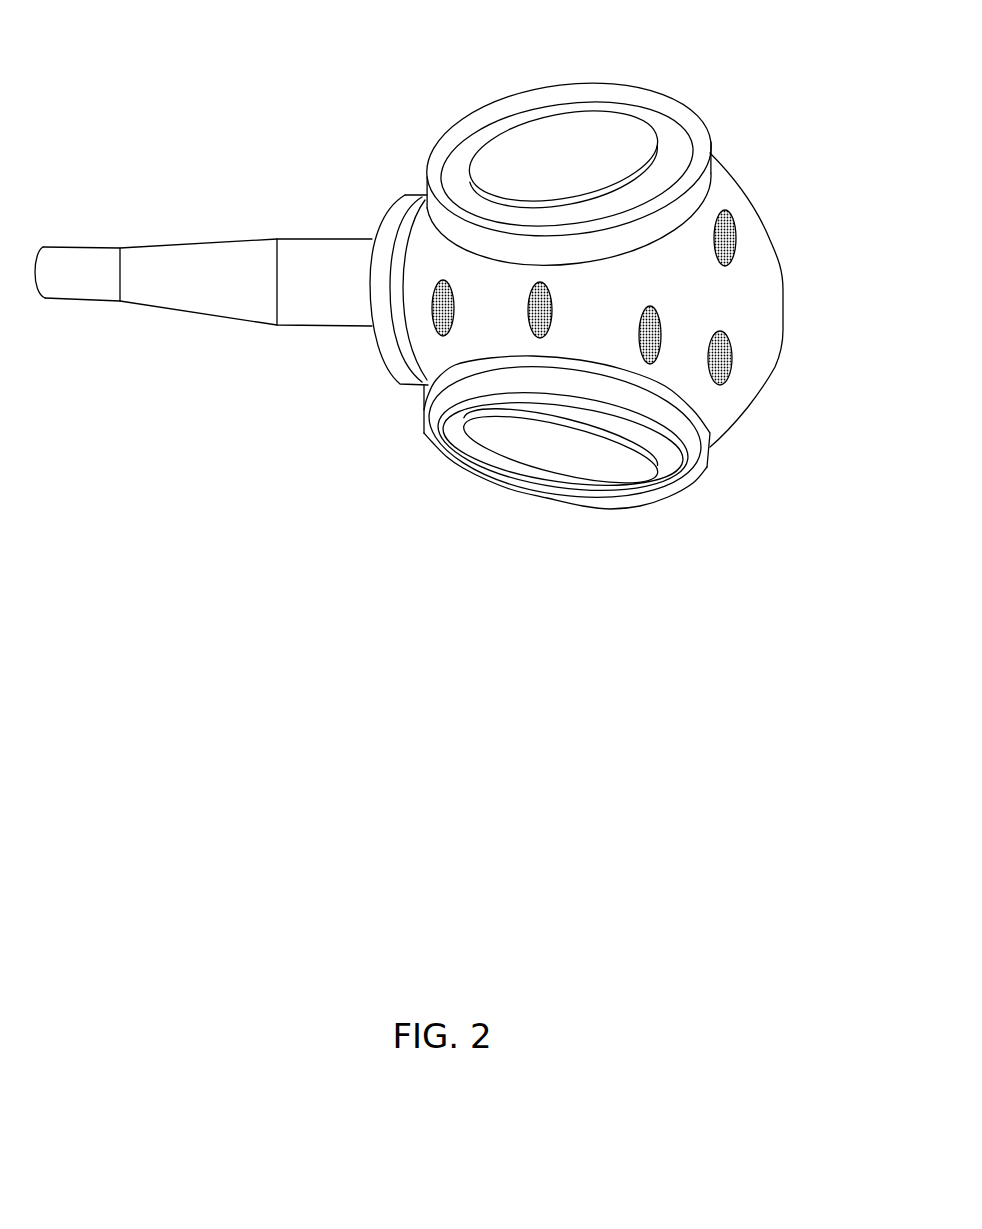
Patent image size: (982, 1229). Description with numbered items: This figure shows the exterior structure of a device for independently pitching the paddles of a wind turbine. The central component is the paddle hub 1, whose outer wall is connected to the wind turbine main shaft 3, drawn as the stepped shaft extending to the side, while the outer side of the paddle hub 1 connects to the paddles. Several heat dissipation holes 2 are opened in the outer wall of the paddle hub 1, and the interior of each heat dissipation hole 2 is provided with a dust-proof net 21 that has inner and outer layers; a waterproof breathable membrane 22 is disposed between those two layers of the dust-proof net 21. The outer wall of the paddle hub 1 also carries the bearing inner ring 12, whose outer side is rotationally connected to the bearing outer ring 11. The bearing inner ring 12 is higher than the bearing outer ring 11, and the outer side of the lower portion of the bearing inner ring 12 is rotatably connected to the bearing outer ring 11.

The paddle hub 1 is at (740, 177).
The bearing outer ring 11 is at (425, 167).
The bearing inner ring 12 is at (547, 103).
The heat dissipation holes 2 is at (737, 250).
The dust-proof net 21 is at (731, 335).
The waterproof breathable membrane 22 is at (733, 367).
The wind turbine main shaft 3 is at (277, 327).